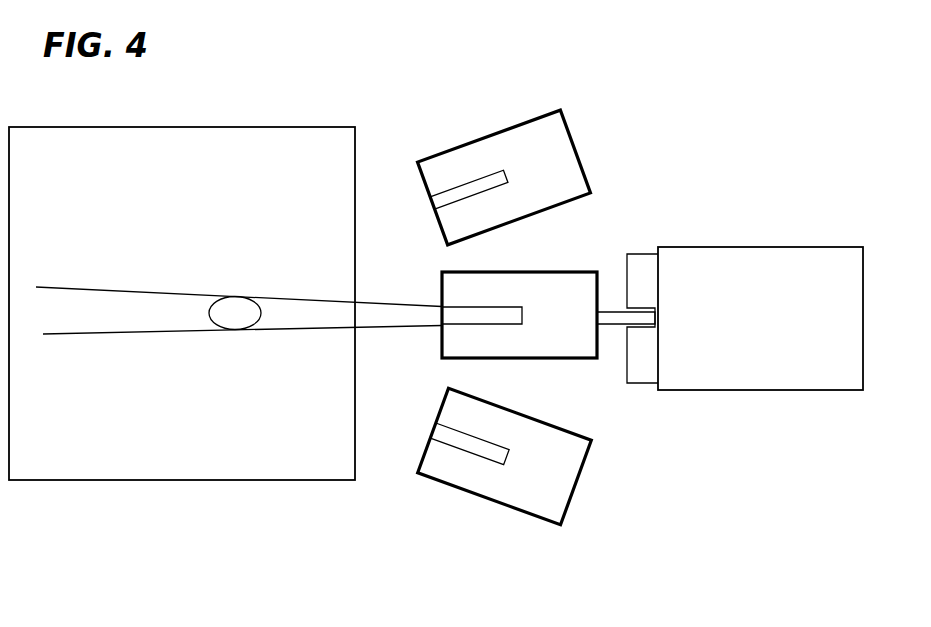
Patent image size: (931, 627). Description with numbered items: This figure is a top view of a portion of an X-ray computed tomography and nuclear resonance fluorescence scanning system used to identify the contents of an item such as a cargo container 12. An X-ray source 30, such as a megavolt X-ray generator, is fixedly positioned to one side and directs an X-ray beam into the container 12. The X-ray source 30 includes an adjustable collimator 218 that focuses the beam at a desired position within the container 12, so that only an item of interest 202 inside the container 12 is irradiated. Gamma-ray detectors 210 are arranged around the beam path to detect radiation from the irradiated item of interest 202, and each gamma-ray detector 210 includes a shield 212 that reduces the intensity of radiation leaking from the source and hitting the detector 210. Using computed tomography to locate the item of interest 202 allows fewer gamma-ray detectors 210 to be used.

The cargo container 12 is at (157, 186).
The X-ray source 30 is at (742, 337).
The item of interest 202 is at (217, 315).
The gamma-ray detector 210 is at (562, 349).
The shield 212 is at (452, 487).
The adjustable collimator 218 is at (640, 254).